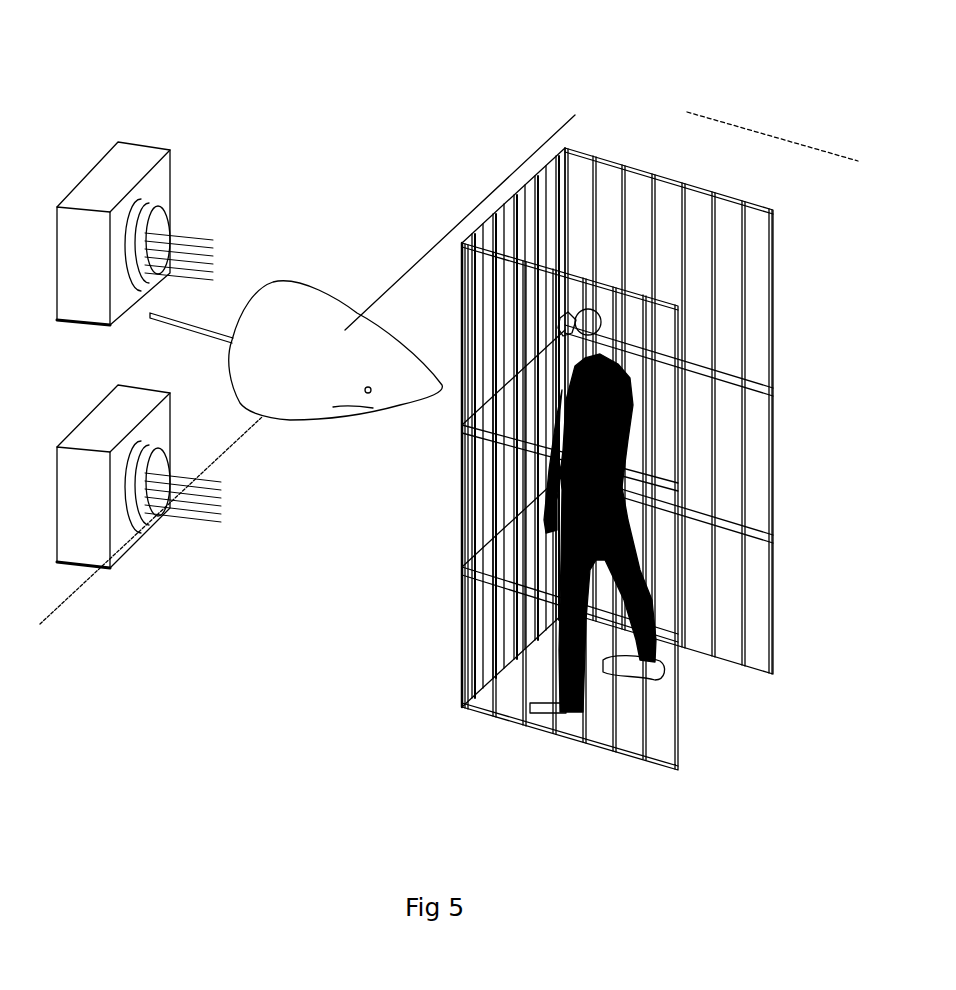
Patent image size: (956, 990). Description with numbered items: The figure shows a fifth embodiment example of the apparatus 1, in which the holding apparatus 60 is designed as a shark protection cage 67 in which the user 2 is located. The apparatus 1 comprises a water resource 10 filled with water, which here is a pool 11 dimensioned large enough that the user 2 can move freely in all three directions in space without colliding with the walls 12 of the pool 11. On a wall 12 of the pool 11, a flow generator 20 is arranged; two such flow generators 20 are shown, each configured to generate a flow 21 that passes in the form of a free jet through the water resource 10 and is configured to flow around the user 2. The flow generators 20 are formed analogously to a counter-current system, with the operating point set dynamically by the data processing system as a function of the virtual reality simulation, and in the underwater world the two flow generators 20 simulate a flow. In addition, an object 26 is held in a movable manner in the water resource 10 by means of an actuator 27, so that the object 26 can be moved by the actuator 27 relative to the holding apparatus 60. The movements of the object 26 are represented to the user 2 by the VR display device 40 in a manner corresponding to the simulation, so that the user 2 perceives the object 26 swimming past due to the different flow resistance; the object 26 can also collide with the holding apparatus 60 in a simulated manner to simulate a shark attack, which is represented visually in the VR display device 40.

The apparatus 1 is at (326, 103).
The user 2 is at (628, 416).
The water resource 10 is at (842, 218).
The pool 11 is at (350, 518).
The wall 12 is at (462, 180).
The flow generator 20 is at (122, 180).
The flow 21 is at (187, 232).
The object 26 is at (348, 328).
The actuator 27 is at (233, 340).
The VR display device 40 is at (567, 322).
The holding apparatus 60 is at (672, 165).
The shark protection cage 67 is at (455, 660).